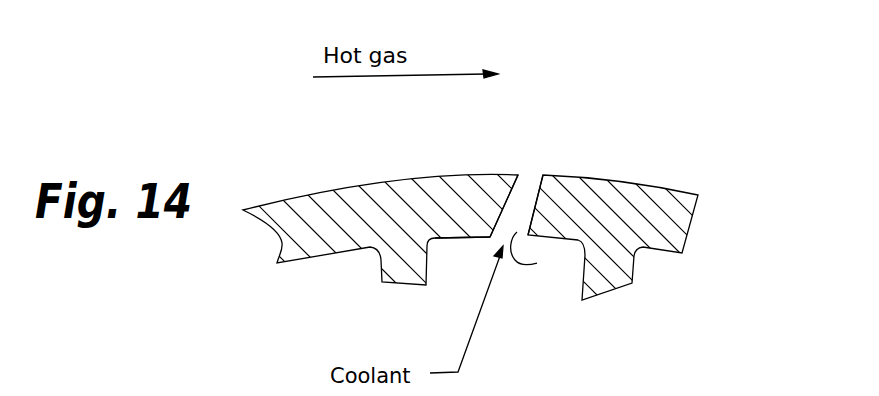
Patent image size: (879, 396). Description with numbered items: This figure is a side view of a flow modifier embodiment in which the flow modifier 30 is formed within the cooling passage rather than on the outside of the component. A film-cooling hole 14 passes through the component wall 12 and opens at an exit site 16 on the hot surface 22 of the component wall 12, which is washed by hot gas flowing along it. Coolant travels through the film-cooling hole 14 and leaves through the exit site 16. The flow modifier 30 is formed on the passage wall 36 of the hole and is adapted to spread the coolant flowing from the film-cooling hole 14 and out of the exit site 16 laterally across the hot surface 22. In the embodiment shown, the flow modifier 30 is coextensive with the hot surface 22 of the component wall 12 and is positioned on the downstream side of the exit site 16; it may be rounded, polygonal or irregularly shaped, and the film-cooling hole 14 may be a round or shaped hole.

The component wall 12 is at (683, 212).
The film-cooling hole 14 is at (500, 237).
The exit site 16 is at (525, 176).
The hot surface 22 is at (357, 182).
The flow modifier 30 is at (550, 177).
The passage wall 36 is at (543, 255).